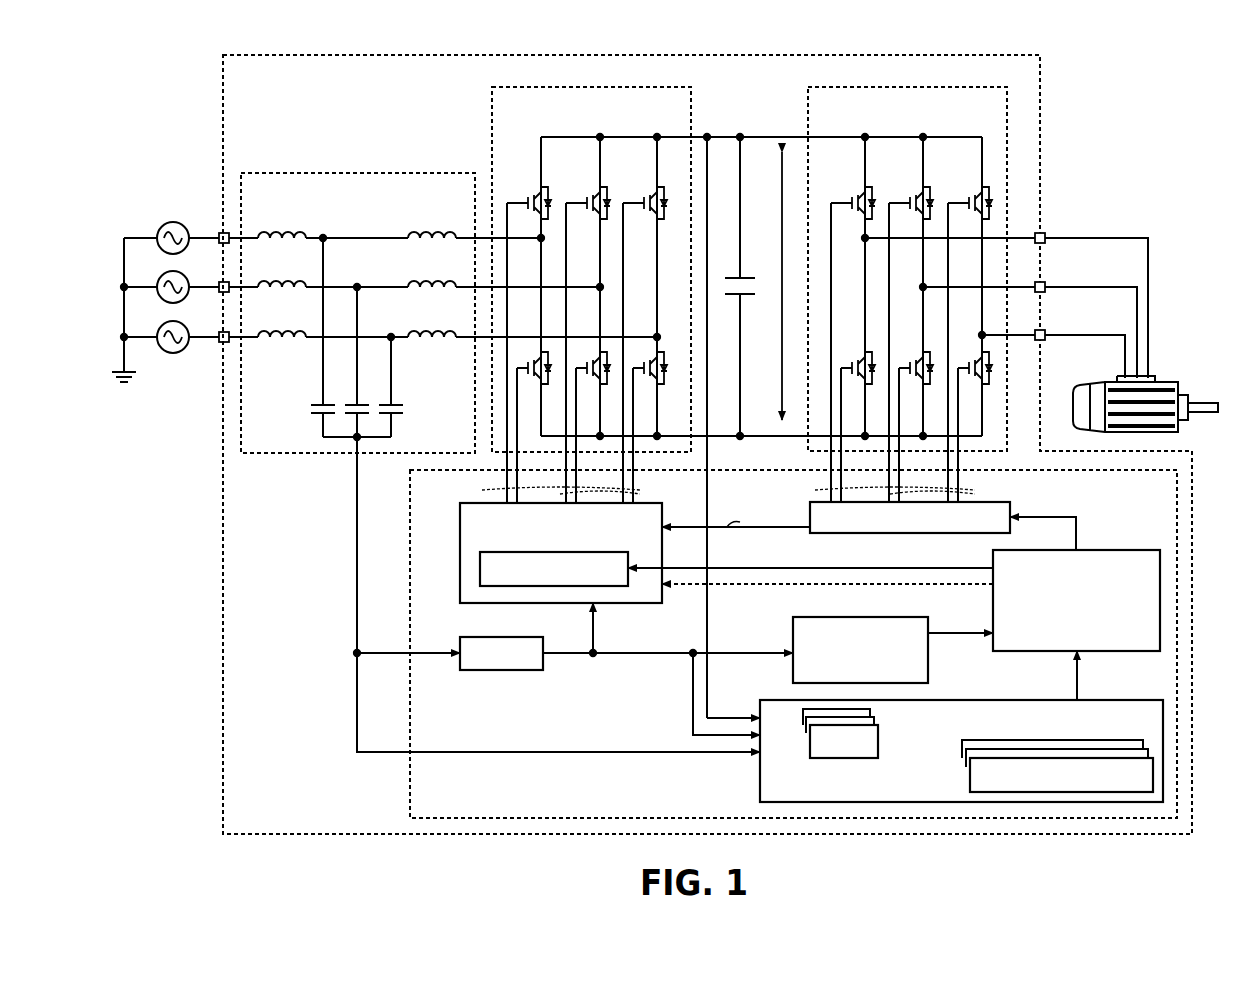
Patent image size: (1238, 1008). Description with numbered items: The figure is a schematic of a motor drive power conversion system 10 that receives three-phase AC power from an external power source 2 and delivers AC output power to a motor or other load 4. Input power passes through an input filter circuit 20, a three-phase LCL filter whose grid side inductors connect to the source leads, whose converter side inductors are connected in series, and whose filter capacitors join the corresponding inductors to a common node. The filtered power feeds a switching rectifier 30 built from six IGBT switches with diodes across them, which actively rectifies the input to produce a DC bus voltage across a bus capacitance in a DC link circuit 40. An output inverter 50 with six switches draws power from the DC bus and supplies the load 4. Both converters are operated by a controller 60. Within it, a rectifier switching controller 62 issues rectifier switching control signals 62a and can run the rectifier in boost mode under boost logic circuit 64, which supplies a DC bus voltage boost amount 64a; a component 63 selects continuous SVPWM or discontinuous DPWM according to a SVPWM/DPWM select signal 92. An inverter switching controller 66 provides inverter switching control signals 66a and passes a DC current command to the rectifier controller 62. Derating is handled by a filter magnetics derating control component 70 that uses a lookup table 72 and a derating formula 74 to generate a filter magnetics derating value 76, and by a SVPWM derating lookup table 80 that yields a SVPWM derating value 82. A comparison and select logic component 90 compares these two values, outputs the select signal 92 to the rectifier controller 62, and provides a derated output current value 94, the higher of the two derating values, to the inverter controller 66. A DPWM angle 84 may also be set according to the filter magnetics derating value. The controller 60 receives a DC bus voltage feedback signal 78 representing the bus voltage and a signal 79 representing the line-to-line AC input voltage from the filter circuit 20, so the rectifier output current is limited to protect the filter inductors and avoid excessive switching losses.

The external power source 2 is at (152, 218).
The motor or other load 4 is at (1168, 382).
The motor drive power conversion system 10 is at (284, 54).
The input filter circuit 20 is at (357, 172).
The rectifier 30 is at (588, 87).
The DC link circuit 40 is at (798, 96).
The output inverter 50 is at (908, 87).
The controller 60 is at (410, 800).
The rectifier switching controller 62 is at (460, 531).
The rectifier switching control signals 62a is at (542, 353).
The SVPWM/DPWM component 63 is at (480, 570).
The boost logic circuit 64 is at (495, 636).
The DC bus voltage boost amount 64a is at (576, 640).
The inverter switching controller 66 is at (810, 524).
The inverter switching control signals 66a is at (875, 352).
The filter magnetics derating control component 70 is at (760, 784).
The lookup table 72 is at (882, 744).
The derating formula 74 is at (1040, 733).
The filter magnetics derating value 76 is at (1077, 685).
The DC bus voltage feedback signal 78 is at (712, 488).
The AC input voltage feedback signal 79 is at (357, 491).
The SVPWM derating lookup table 80 is at (862, 616).
The SVPWM derating value 82 is at (945, 634).
The DPWM angle 84 is at (690, 588).
The comparison and select logic component 90 is at (1103, 550).
The SVPWM/DPWM select signal 92 is at (975, 566).
The derated output current value 94 is at (1076, 534).